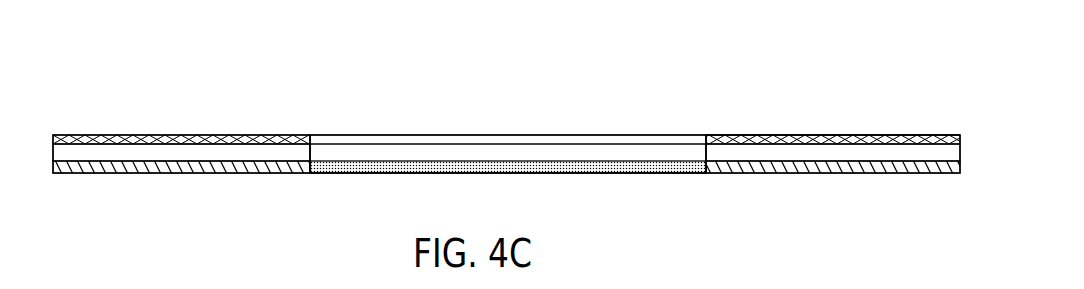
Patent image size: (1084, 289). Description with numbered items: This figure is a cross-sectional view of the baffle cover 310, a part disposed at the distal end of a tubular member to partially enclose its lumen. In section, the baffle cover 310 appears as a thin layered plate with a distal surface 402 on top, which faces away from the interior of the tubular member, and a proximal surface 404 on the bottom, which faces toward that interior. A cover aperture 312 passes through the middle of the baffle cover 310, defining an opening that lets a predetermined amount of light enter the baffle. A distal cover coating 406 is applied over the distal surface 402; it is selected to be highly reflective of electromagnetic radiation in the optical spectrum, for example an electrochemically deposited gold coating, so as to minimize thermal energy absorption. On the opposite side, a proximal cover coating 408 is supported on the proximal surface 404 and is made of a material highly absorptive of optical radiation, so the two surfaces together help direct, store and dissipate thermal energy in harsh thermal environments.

The baffle cover 310 is at (132, 108).
The distal surface 402 is at (218, 123).
The cover aperture 312 is at (413, 124).
The distal cover coating 406 is at (814, 135).
The proximal surface 404 is at (221, 198).
The proximal cover coating 408 is at (148, 173).